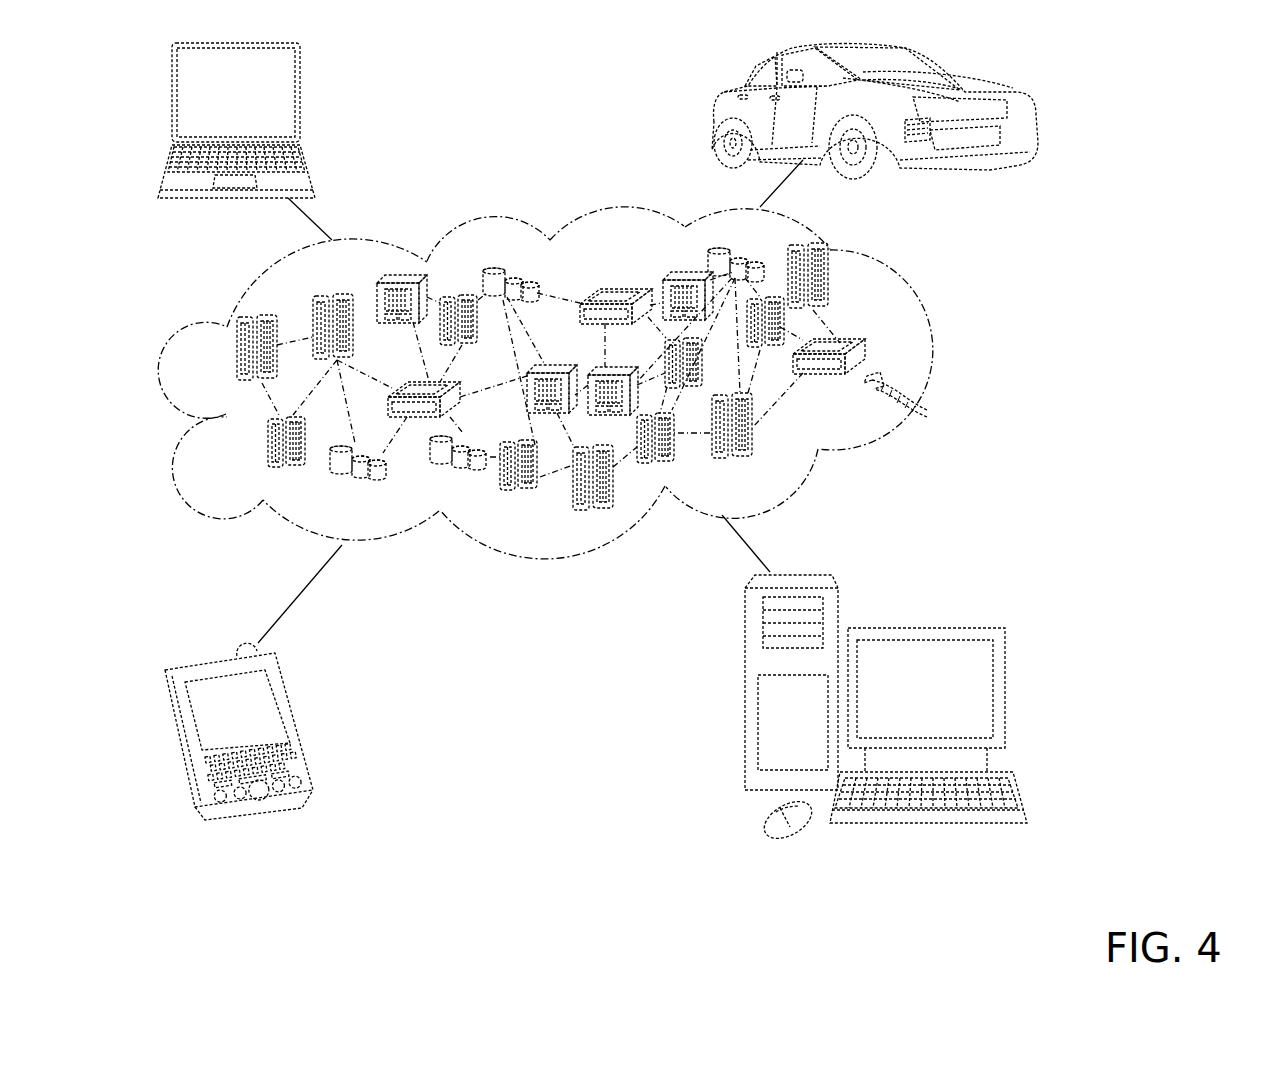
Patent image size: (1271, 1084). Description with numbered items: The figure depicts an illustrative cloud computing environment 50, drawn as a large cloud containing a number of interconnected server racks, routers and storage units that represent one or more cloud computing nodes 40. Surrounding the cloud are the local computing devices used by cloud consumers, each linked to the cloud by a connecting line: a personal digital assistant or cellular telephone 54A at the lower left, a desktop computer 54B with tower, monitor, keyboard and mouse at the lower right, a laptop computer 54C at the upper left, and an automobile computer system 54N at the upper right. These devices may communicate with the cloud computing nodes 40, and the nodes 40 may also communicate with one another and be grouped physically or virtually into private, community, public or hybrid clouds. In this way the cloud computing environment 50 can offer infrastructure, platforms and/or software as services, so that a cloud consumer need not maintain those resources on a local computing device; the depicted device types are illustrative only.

The cloud computing environment 50 is at (920, 355).
The cloud computing nodes 40 is at (913, 401).
The personal digital assistant or cellular telephone 54A is at (296, 718).
The desktop computer 54B is at (922, 628).
The laptop computer 54C is at (300, 100).
The automobile computer system 54N is at (712, 116).